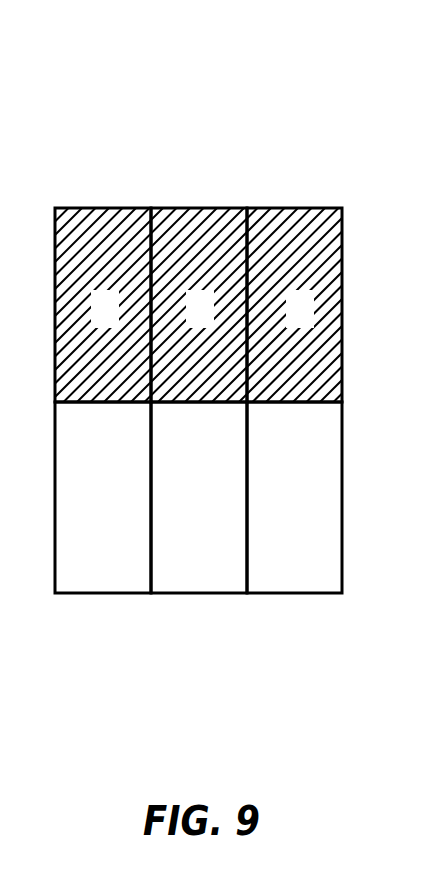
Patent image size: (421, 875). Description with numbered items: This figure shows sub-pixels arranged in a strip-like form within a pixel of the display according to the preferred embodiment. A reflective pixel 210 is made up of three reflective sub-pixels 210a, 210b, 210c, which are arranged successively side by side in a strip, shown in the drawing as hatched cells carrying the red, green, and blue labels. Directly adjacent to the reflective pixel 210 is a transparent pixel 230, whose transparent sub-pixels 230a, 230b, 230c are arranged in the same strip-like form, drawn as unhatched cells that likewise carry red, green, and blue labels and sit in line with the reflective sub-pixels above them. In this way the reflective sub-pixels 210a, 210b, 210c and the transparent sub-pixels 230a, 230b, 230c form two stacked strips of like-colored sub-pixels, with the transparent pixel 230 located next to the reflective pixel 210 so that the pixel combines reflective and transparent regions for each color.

The reflective pixel 210 is at (198, 211).
The reflective sub-pixel 210a is at (98, 208).
The reflective sub-pixel 210b is at (201, 208).
The reflective sub-pixel 210c is at (294, 252).
The transparent pixel 230 is at (198, 592).
The transparent sub-pixel 230a is at (100, 593).
The transparent sub-pixel 230b is at (193, 593).
The transparent sub-pixel 230c is at (293, 554).